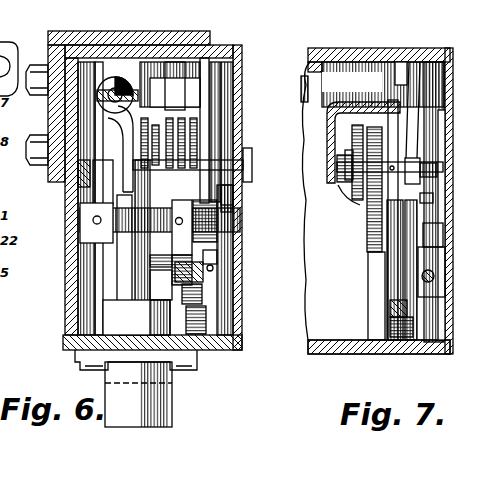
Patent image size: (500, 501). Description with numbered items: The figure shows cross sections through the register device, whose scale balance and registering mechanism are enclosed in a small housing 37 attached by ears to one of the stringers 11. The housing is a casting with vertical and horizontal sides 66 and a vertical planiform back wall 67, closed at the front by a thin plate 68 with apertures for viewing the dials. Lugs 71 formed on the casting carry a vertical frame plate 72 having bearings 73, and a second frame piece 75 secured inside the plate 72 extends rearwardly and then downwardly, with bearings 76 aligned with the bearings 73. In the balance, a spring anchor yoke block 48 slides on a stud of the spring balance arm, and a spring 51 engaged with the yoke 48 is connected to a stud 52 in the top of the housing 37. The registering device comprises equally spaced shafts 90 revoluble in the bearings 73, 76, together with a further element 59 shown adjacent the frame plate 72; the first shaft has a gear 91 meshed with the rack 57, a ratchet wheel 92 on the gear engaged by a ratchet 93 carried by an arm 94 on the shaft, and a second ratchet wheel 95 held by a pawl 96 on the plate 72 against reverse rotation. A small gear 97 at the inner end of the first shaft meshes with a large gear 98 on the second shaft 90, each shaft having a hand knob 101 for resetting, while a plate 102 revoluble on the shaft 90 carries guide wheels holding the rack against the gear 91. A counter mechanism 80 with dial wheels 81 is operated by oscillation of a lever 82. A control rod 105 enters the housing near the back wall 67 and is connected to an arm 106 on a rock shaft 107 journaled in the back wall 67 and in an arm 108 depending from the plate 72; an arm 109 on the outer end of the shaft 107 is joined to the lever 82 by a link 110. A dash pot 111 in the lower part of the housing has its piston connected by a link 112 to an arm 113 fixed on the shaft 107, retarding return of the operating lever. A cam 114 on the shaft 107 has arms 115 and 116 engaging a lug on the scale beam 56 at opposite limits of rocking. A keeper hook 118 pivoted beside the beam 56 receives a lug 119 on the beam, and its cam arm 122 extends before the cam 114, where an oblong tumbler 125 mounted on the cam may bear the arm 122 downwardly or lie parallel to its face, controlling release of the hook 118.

In FIG. 6, the stringer 11 is at (76, 22).
In FIG. 6, the housing 37 is at (64, 318).
In FIG. 7, the housing 37 is at (328, 354).
In FIG. 6, the spring anchor yoke block 48 is at (97, 95).
In FIG. 6, the spring 51 is at (112, 78).
In FIG. 7, the stud 52 is at (302, 85).
In FIG. 6, the scale beam 56 is at (198, 350).
In FIG. 7, the scale beam 56 is at (372, 310).
In FIG. 7, the rack 57 is at (375, 295).
In FIG. 6, the plate 59 is at (233, 193).
In FIG. 7, the plate 59 is at (440, 130).
In FIG. 6, the horizontal side 66 is at (156, 41).
In FIG. 7, the horizontal side 66 is at (372, 55).
In FIG. 6, the back wall 67 is at (64, 272).
In FIG. 6, the front plate 68 is at (245, 338).
In FIG. 7, the front plate 68 is at (450, 320).
In FIG. 6, the lug 71 is at (205, 58).
In FIG. 7, the lug 71 is at (402, 62).
In FIG. 6, the frame plate 72 is at (215, 108).
In FIG. 7, the frame plate 72 is at (430, 95).
In FIG. 6, the bearing 73 is at (226, 118).
In FIG. 7, the bearing 73 is at (420, 165).
In FIG. 6, the second frame piece 75 is at (174, 62).
In FIG. 7, the second frame piece 75 is at (348, 170).
In FIG. 6, the bearing 76 is at (128, 160).
In FIG. 7, the bearing 76 is at (340, 190).
In FIG. 7, the counter mechanism 80 is at (445, 258).
In FIG. 7, the dial wheel 81 is at (443, 235).
In FIG. 6, the lever 82 is at (217, 235).
In FIG. 7, the lever 82 is at (434, 278).
In FIG. 6, the shaft 90 is at (238, 158).
In FIG. 7, the shaft 90 is at (443, 166).
In FIG. 7, the gear 91 is at (365, 205).
In FIG. 7, the ratchet wheel 92 is at (355, 185).
In FIG. 7, the ratchet 93 is at (340, 105).
In FIG. 7, the arm 94 is at (355, 145).
In FIG. 7, the second ratchet wheel 95 is at (437, 175).
In FIG. 7, the pawl 96 is at (410, 120).
In FIG. 7, the small gear 97 is at (340, 160).
In FIG. 6, the large gear 98 is at (150, 62).
In FIG. 6, the hand knob 101 is at (252, 170).
In FIG. 7, the plate 102 is at (365, 222).
In FIG. 6, the control rod 105 is at (78, 178).
In FIG. 6, the arm 106 is at (96, 190).
In FIG. 6, the rock shaft 107 is at (80, 235).
In FIG. 6, the arm 108 is at (215, 205).
In FIG. 6, the arm 109 is at (225, 222).
In FIG. 6, the link 110 is at (205, 275).
In FIG. 7, the link 110 is at (417, 280).
In FIG. 6, the dash pot 111 is at (172, 392).
In FIG. 6, the link 112 is at (140, 285).
In FIG. 6, the arm 113 is at (172, 240).
In FIG. 6, the cam 114 is at (160, 261).
In FIG. 6, the arm 115 is at (171, 270).
In FIG. 6, the arm 116 is at (159, 285).
In FIG. 6, the keeper hook 118 is at (206, 320).
In FIG. 6, the lug 119 is at (204, 300).
In FIG. 6, the cam arm 122 is at (214, 270).
In FIG. 6, the tumbler 125 is at (220, 265).